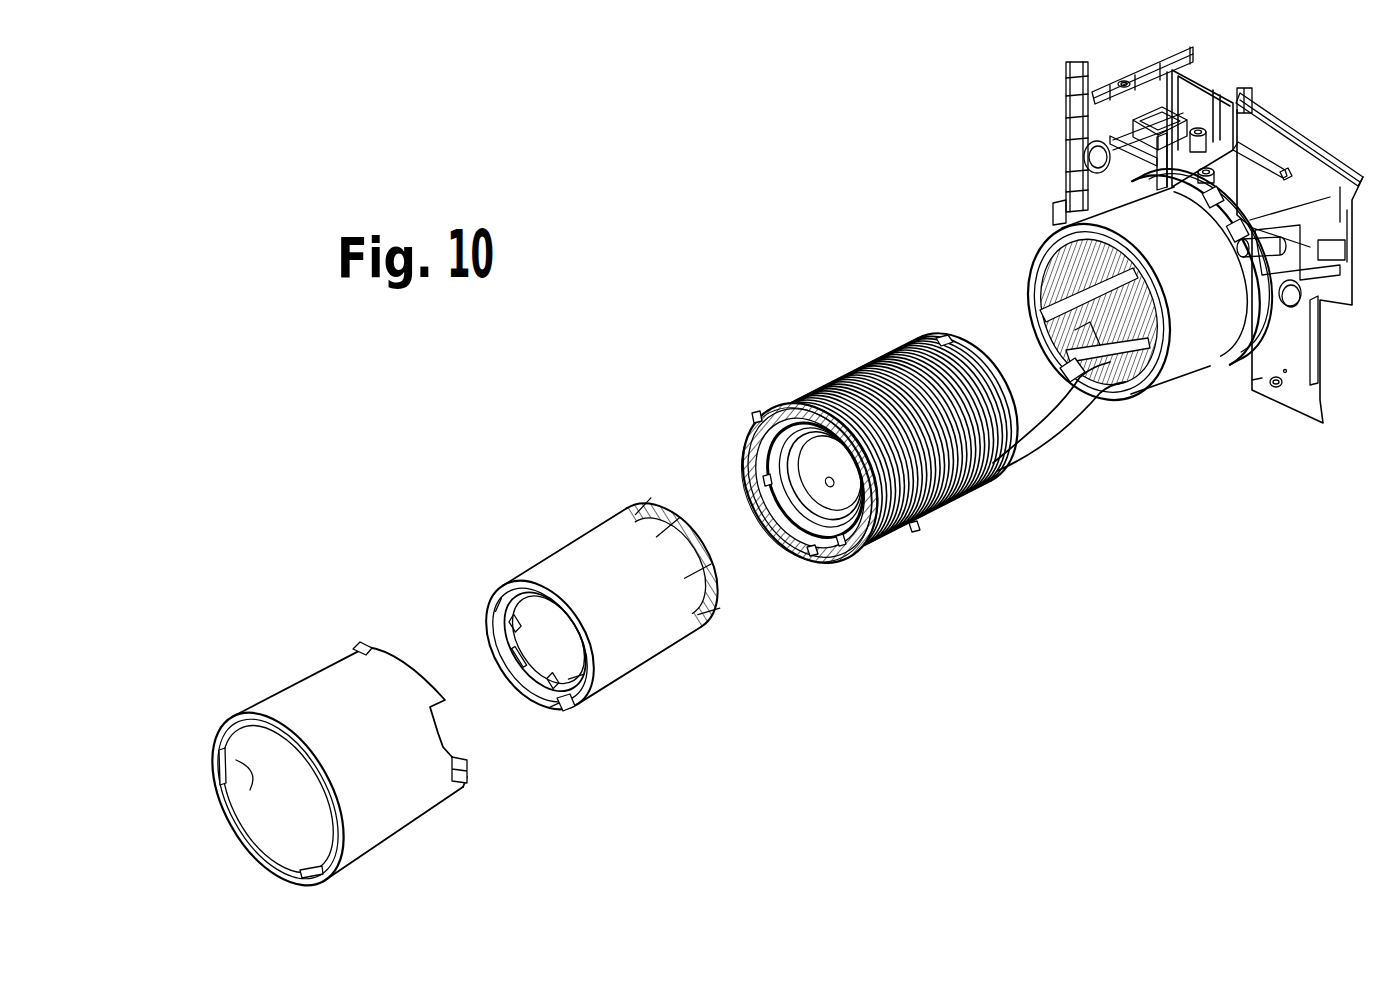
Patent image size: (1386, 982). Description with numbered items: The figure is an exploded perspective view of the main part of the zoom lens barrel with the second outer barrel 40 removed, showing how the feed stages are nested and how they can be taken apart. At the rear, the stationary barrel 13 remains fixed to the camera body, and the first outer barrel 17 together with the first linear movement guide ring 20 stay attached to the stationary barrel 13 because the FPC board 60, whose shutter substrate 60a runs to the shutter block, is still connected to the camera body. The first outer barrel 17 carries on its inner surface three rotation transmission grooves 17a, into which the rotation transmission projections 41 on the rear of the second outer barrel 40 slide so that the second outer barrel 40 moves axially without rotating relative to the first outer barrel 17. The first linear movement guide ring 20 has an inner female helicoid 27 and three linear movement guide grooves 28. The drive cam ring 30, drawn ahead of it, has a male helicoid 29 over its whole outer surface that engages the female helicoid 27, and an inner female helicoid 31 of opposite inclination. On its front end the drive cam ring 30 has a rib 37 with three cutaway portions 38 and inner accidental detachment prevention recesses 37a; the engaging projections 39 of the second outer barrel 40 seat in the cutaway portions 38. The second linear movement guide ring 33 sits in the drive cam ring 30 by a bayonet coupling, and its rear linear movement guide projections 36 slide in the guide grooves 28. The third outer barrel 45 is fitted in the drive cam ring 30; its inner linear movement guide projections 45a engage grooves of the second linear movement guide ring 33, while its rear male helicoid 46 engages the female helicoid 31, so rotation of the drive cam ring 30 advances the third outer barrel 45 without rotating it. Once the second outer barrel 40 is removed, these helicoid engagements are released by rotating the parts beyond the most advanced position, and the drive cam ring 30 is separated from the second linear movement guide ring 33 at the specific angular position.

The stationary barrel 13 is at (1277, 93).
The first outer barrel 17 is at (1124, 306).
The rotation transmission grooves 17a is at (1070, 360).
The first linear movement guide ring 20 is at (1067, 337).
The female helicoid 27 is at (1040, 305).
The linear movement guide grooves 28 is at (1060, 313).
The male helicoid 29 is at (814, 356).
The drive cam ring 30 is at (899, 411).
The female helicoid 31 is at (796, 512).
The second linear movement guide ring 33 is at (840, 535).
The linear movement guide projections 36 is at (941, 337).
The rib 37 is at (760, 432).
The accidental detachment prevention recesses 37a is at (767, 480).
The cutaway portions 38 is at (757, 417).
The engaging projections 39 is at (222, 762).
The second outer barrel 40 is at (290, 677).
The rotation transmission projections 41 is at (357, 643).
The third outer barrel 45 is at (633, 620).
The linear movement guide projections 45a is at (565, 708).
The male helicoid 46 is at (720, 583).
The FPC board 60 is at (1059, 442).
The shutter substrate 60a is at (1057, 423).